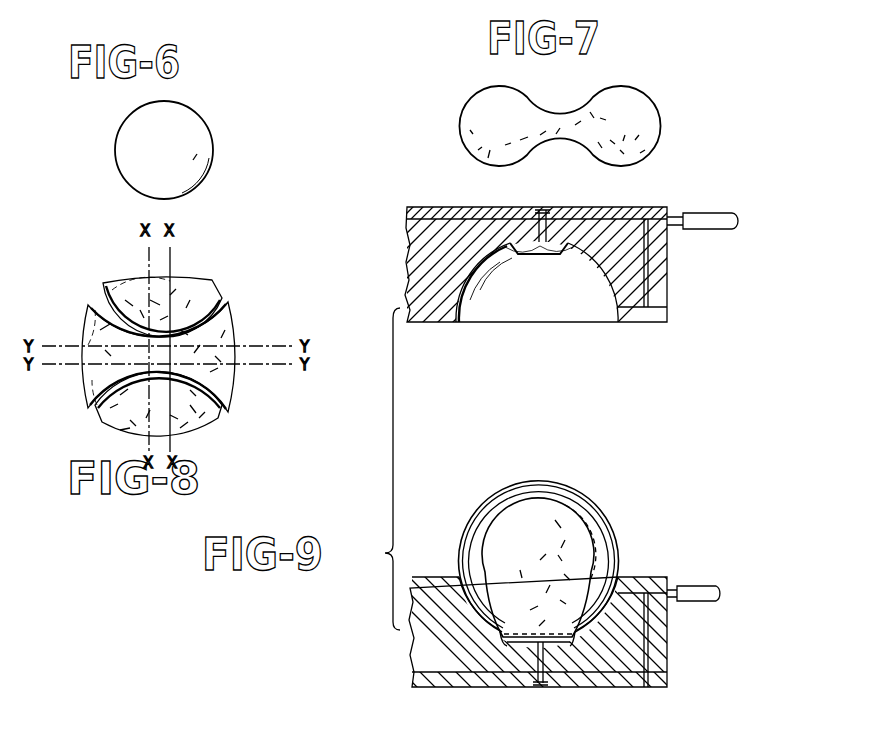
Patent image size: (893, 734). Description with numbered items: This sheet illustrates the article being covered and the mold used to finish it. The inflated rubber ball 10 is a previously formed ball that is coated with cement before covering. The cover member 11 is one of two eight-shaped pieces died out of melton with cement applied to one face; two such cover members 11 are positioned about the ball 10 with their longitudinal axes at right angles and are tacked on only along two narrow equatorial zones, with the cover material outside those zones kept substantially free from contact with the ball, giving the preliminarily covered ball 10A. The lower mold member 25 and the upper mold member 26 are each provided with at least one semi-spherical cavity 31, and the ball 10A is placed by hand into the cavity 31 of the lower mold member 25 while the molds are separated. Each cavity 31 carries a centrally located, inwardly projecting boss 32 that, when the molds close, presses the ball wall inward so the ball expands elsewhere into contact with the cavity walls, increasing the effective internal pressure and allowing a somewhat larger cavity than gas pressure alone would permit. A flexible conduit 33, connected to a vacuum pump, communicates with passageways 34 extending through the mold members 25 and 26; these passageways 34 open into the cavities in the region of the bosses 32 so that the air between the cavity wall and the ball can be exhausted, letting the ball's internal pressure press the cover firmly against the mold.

In FIG. 6, the inflated rubber ball 10 is at (202, 143).
In FIG. 8, the inflated rubber ball 10 is at (212, 300).
In FIG. 9, the inflated rubber ball 10 is at (594, 525).
In FIG. 8, the preliminarily covered ball 10A is at (220, 383).
In FIG. 9, the preliminarily covered ball 10A is at (571, 523).
In FIG. 7, the cover member 11 is at (659, 127).
In FIG. 8, the cover member 11 is at (205, 285).
In FIG. 9, the cover member 11 is at (614, 540).
In FIG. 9, the lower mold member 25 is at (660, 633).
In FIG. 7, the upper mold member 26 is at (664, 268).
In FIG. 7, the semi-spherical cavity 31 is at (537, 282).
In FIG. 9, the semi-spherical cavity 31 is at (613, 568).
In FIG. 7, the boss 32 is at (520, 256).
In FIG. 9, the boss 32 is at (563, 662).
In FIG. 7, the flexible conduit 33 is at (712, 216).
In FIG. 9, the flexible conduit 33 is at (697, 585).
In FIG. 7, the passageway 34 is at (563, 209).
In FIG. 9, the passageway 34 is at (518, 690).